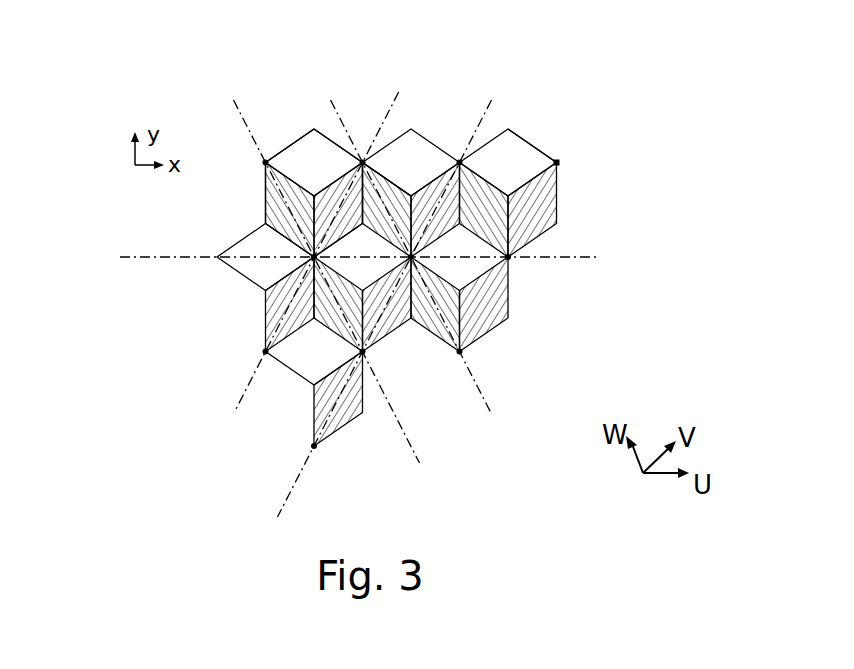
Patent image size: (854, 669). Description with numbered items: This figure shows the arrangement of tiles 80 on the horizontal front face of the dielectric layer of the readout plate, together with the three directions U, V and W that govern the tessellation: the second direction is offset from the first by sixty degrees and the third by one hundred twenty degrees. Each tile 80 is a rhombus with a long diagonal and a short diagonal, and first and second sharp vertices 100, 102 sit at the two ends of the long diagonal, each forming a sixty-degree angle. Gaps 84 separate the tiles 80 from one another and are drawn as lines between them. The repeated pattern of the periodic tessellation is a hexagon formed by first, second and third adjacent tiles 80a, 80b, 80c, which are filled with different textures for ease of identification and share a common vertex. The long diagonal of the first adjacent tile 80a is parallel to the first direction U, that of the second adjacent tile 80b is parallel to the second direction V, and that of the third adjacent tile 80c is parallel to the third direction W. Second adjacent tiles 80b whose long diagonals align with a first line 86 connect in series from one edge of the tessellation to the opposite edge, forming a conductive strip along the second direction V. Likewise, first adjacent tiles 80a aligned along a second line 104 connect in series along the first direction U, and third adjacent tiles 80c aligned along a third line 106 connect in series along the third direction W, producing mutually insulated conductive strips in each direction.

The tile 80 is at (303, 150).
The first adjacent tile 80a is at (508, 157).
The second adjacent tile 80b is at (490, 308).
The third adjacent tile 80c is at (290, 211).
The gap 84 is at (412, 196).
The first line 86 is at (460, 162).
The first sharp vertex 100 is at (557, 163).
The second sharp vertex 102 is at (528, 256).
The second line 104 is at (585, 260).
The third line 106 is at (264, 158).